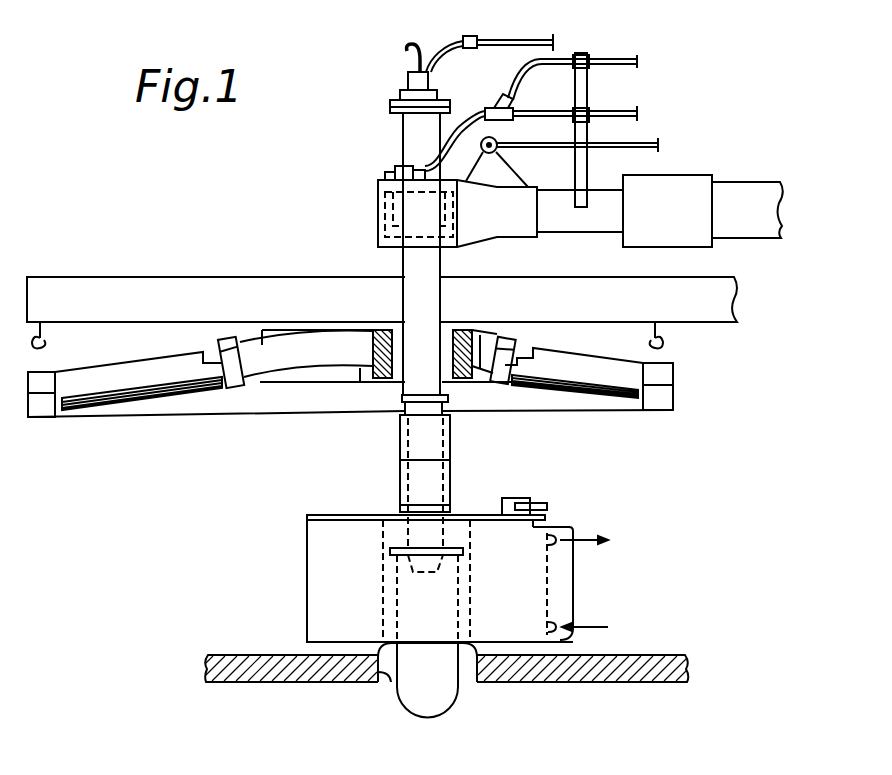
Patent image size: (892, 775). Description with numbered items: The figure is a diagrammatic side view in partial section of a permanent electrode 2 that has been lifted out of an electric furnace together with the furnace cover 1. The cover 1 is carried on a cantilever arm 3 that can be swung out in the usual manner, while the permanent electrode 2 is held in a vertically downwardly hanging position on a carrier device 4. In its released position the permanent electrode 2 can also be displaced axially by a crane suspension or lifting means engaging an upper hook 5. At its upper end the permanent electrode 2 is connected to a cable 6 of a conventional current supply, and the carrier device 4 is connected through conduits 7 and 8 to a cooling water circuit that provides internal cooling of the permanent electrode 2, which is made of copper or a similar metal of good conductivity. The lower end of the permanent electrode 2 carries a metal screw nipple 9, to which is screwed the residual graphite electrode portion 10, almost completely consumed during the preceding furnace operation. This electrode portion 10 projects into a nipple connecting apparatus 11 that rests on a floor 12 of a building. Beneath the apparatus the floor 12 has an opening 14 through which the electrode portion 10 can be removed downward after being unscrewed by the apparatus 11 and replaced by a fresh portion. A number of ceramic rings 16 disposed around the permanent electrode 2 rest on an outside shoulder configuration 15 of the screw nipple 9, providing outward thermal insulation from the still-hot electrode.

The cover 1 is at (143, 413).
The permanent electrode 2 is at (394, 140).
The cantilever arm 3 is at (177, 282).
The carrier device 4 is at (733, 196).
The upper hook 5 is at (412, 46).
The cable 6 is at (515, 40).
The conduit 7 is at (614, 62).
The conduit 8 is at (617, 112).
The screw nipple 9 is at (408, 570).
The graphite electrode portion 10 is at (448, 690).
The nipple connecting apparatus 11 is at (285, 603).
The floor 12 is at (652, 667).
The opening 14 is at (385, 684).
The outside shoulder configuration 15 is at (390, 548).
The ceramic rings 16 is at (400, 432).